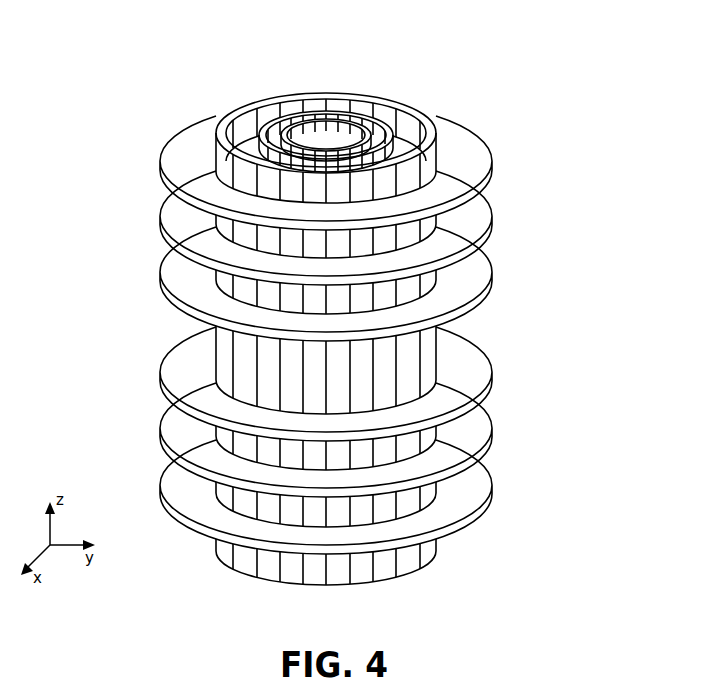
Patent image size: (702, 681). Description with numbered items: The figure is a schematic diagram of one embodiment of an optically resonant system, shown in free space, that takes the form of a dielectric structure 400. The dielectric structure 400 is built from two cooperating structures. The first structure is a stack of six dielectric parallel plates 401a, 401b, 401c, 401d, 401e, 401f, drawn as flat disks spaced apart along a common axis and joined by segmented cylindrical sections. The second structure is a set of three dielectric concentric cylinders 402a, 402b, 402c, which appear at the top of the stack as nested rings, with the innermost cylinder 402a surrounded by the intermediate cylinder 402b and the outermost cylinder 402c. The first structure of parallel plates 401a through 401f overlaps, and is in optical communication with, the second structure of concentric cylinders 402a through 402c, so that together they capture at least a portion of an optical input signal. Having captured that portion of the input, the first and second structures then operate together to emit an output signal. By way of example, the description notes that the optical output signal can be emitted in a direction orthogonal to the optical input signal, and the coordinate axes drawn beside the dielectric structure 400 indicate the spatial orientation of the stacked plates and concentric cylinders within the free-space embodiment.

The dielectric structure 400 is at (231, 601).
The dielectric parallel plate 401a is at (493, 485).
The dielectric parallel plate 401b is at (493, 428).
The dielectric parallel plate 401c is at (493, 372).
The dielectric parallel plate 401d is at (493, 272).
The dielectric parallel plate 401e is at (493, 216).
The dielectric parallel plate 401f is at (493, 161).
The dielectric concentric cylinder 402a is at (335, 112).
The dielectric concentric cylinder 402b is at (360, 110).
The dielectric concentric cylinder 402c is at (405, 110).